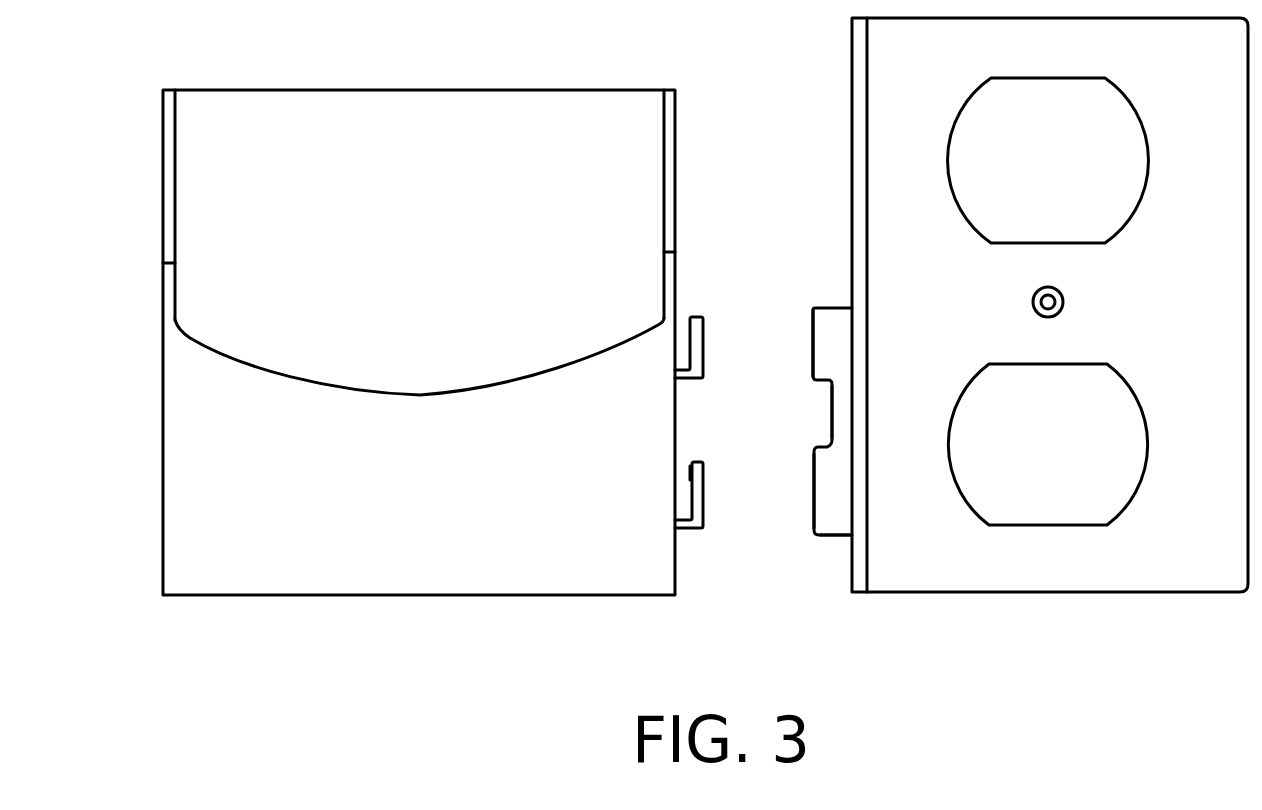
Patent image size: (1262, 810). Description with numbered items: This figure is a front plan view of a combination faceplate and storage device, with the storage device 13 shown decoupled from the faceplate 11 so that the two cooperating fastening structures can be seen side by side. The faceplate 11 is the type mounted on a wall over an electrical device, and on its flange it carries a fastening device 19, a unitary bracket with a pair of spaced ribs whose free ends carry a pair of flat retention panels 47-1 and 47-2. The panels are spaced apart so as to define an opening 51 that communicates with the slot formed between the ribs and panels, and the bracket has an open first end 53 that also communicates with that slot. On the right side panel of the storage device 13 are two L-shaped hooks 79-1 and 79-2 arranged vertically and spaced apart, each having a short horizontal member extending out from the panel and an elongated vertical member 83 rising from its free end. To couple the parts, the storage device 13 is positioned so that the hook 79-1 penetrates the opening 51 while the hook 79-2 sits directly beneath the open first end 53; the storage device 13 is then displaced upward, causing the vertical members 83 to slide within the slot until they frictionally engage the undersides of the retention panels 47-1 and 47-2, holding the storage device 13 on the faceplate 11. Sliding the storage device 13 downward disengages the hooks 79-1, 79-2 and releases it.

The faceplate 11 is at (1133, 606).
The storage device 13 is at (300, 616).
The fastening device 19 is at (812, 452).
The flat retention panel 47-1 is at (812, 338).
The flat retention panel 47-2 is at (814, 482).
The opening 51 is at (832, 406).
The first end 53 is at (831, 537).
The L-shaped hook 79-1 is at (717, 350).
The L-shaped hook 79-2 is at (708, 510).
The elongated vertical member 83 is at (692, 480).